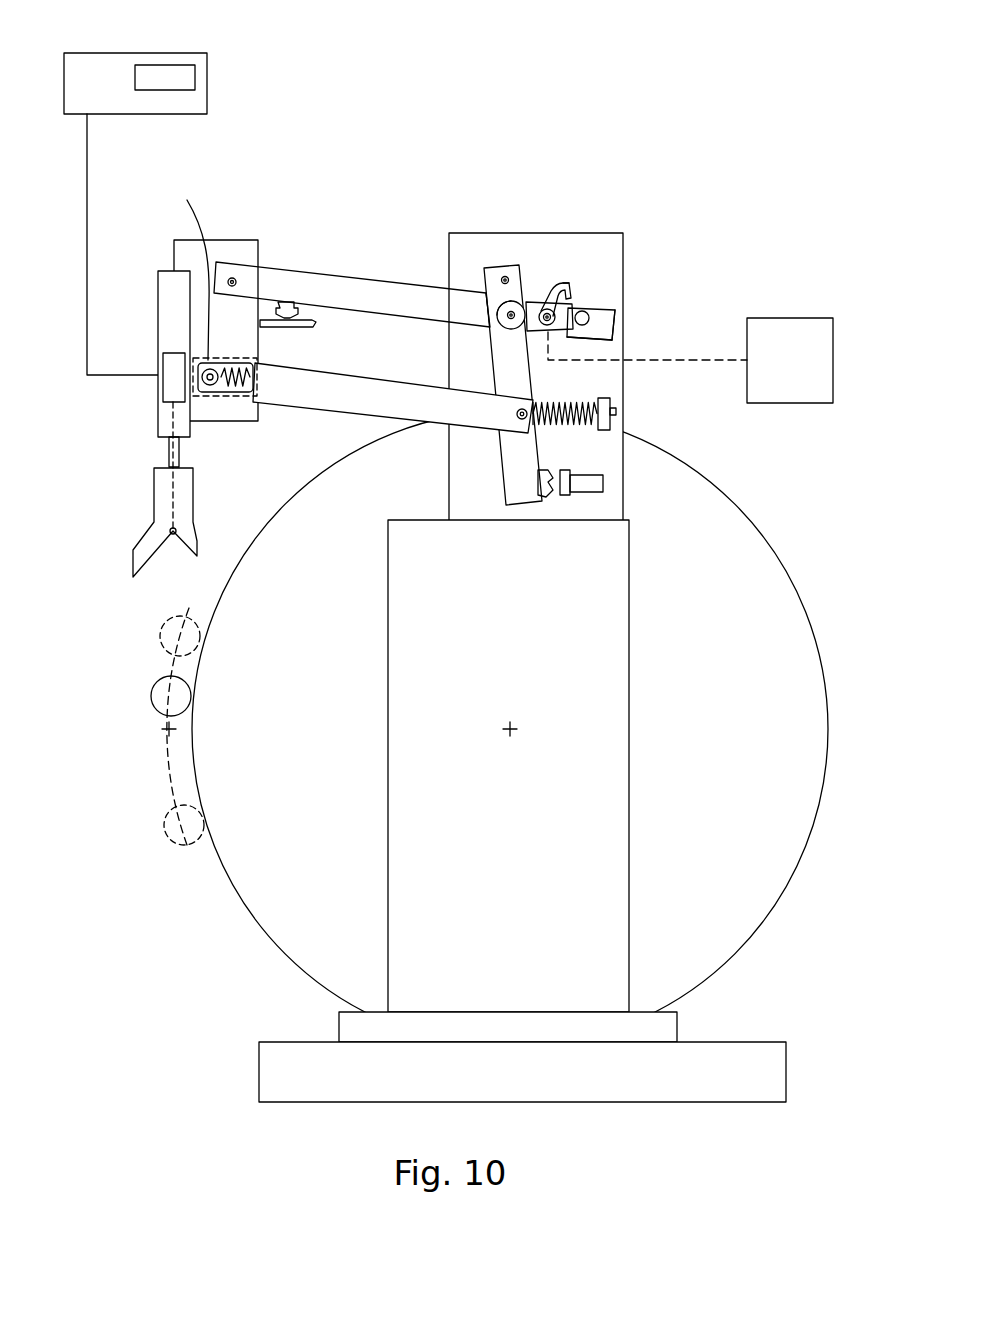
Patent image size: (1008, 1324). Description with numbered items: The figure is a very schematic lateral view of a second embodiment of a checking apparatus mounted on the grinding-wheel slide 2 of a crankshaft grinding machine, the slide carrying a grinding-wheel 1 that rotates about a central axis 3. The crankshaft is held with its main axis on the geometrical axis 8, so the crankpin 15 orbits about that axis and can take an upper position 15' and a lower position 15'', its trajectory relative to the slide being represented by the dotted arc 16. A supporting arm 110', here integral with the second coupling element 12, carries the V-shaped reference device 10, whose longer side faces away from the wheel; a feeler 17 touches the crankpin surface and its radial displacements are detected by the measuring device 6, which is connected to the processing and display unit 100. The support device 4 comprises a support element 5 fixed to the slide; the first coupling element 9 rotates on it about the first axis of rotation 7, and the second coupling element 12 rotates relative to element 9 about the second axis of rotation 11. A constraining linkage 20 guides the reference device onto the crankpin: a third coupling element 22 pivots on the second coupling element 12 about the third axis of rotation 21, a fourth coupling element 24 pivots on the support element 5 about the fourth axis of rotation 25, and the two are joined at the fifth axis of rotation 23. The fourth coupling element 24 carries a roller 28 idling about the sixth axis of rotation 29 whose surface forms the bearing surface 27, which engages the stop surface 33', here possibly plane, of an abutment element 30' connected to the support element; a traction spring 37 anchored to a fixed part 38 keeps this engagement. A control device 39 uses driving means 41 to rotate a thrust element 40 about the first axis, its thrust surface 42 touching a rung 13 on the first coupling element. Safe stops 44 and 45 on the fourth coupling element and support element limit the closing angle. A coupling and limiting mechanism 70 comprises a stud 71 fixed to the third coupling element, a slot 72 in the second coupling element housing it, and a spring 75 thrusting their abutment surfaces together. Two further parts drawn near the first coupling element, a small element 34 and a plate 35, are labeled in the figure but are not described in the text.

The grinding-wheel 1 is at (698, 952).
The grinding-wheel slide 2 is at (435, 915).
The central axis of rotation 3 is at (512, 732).
The support device 4 is at (352, 148).
The support element 5 is at (603, 247).
The measuring device 6 is at (172, 388).
The first axis of rotation 7 is at (551, 300).
The geometrical axis of rotation 8 is at (167, 731).
The first coupling element 9 is at (397, 302).
The reference device 10 is at (165, 498).
The second axis of rotation 11 is at (240, 283).
The second coupling element 12 is at (237, 243).
The rung 13 is at (578, 324).
The crankpin 15 is at (123, 701).
The upper position 15' is at (123, 638).
The lower position 15'' is at (153, 860).
The arc 16 is at (173, 789).
The feeler 17 is at (174, 536).
The constraining linkage 20 is at (434, 372).
The third axis of rotation 21 is at (185, 264).
The third coupling element 22 is at (349, 403).
The fifth axis of rotation 23 is at (530, 420).
The fourth coupling element 24 is at (495, 275).
The fourth axis of rotation 25 is at (505, 277).
The bearing surface 27 is at (516, 288).
The roller 28 is at (546, 308).
The sixth axis of rotation 29 is at (500, 306).
The abutment element 30' is at (689, 253).
The stop surface 33' is at (680, 277).
The hook 34 is at (289, 298).
The plate 35 is at (310, 322).
The traction spring 37 is at (568, 407).
The fixed part 38 is at (617, 412).
The control device 39 is at (678, 166).
The thrust element 40 is at (580, 292).
The driving means 41 is at (797, 333).
The thrust surface 42 is at (589, 314).
The safe stop 44 is at (547, 489).
The safe stop 45 is at (568, 497).
The coupling and limiting mechanism 70 is at (275, 357).
The stud 71 is at (212, 395).
The slot 72 is at (254, 395).
The spring 75 is at (238, 393).
The processing and display unit 100 is at (112, 63).
The supporting arm 110' is at (141, 345).